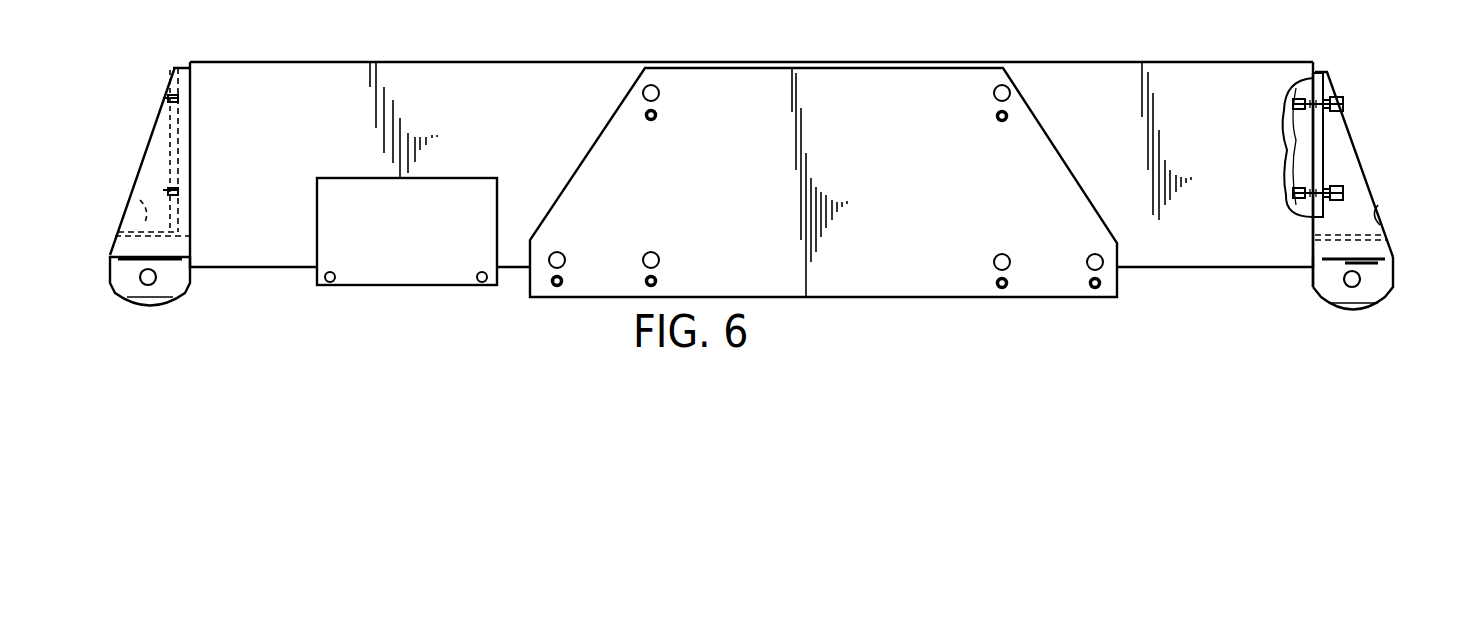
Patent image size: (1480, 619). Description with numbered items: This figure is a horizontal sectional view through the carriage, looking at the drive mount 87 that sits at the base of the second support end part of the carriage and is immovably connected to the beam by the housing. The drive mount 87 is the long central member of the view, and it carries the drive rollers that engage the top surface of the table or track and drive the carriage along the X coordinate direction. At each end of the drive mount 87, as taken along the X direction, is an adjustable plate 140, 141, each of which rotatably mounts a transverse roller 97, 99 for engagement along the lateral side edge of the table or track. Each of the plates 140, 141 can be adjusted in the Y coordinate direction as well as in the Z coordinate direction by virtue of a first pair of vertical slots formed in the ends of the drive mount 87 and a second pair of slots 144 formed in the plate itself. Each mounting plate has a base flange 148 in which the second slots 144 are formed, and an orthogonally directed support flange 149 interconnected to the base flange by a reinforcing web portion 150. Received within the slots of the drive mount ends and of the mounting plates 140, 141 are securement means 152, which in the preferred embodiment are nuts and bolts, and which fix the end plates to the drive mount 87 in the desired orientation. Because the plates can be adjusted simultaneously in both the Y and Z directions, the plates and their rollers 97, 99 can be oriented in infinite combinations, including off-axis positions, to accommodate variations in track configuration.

The drive mount 87 is at (1129, 56).
The transverse roller 97 is at (160, 297).
The transverse roller 99 is at (1338, 312).
The adjustable plate 140 is at (156, 106).
The adjustable plate 141 is at (1355, 79).
The second slots 144 is at (1292, 148).
The base flange 148 is at (1327, 155).
The support flange 149 is at (1383, 213).
The reinforcing web portion 150 is at (1350, 173).
The securement means 152 is at (163, 97).